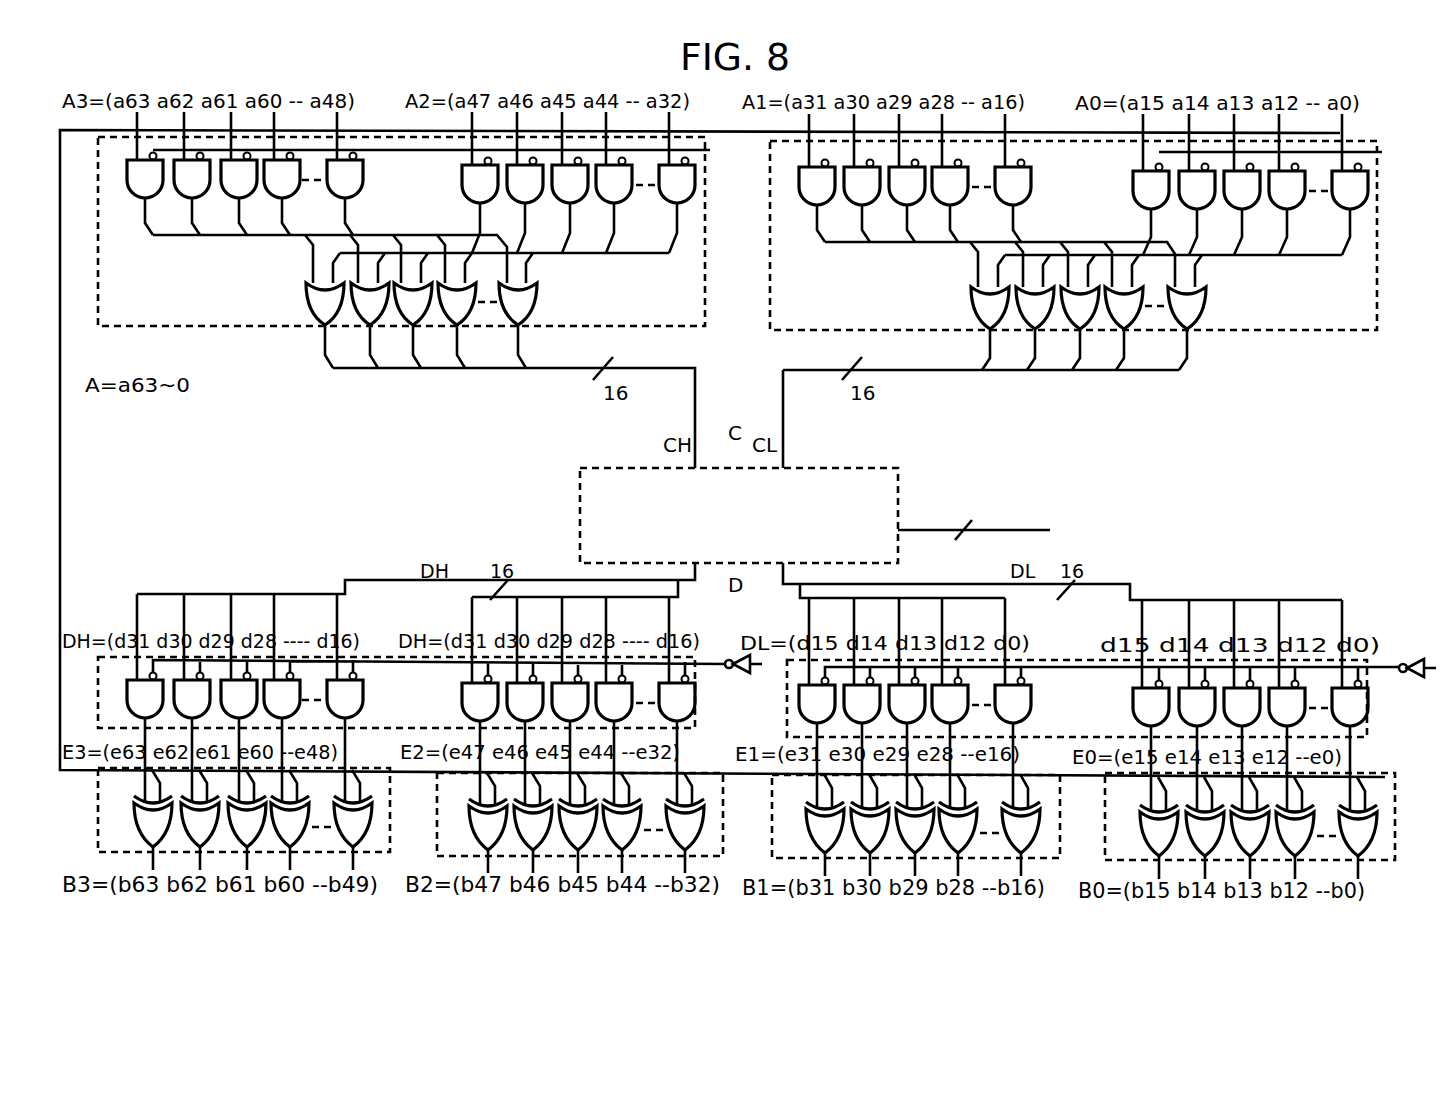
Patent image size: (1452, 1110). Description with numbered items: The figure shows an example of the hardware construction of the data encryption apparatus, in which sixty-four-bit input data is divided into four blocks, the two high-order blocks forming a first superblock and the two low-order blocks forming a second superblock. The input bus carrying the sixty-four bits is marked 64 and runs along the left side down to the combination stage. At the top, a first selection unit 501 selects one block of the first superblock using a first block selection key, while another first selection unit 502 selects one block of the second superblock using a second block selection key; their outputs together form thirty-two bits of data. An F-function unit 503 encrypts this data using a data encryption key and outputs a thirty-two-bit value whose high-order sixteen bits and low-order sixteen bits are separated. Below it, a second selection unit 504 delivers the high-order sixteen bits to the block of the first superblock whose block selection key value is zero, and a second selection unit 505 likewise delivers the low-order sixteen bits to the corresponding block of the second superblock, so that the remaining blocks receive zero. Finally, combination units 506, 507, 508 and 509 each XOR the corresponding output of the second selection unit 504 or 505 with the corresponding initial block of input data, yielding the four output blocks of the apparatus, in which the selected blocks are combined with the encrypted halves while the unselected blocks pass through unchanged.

The 64-bit data bus A 64 is at (52, 360).
The first selection unit 501 is at (705, 303).
The first selection unit 502 is at (1377, 223).
The F-function unit 503 is at (902, 545).
The second selection unit 504 is at (698, 723).
The second selection unit 505 is at (1368, 727).
The combination unit 506 is at (390, 795).
The combination unit 507 is at (723, 800).
The combination unit 508 is at (938, 825).
The combination unit 509 is at (1395, 855).